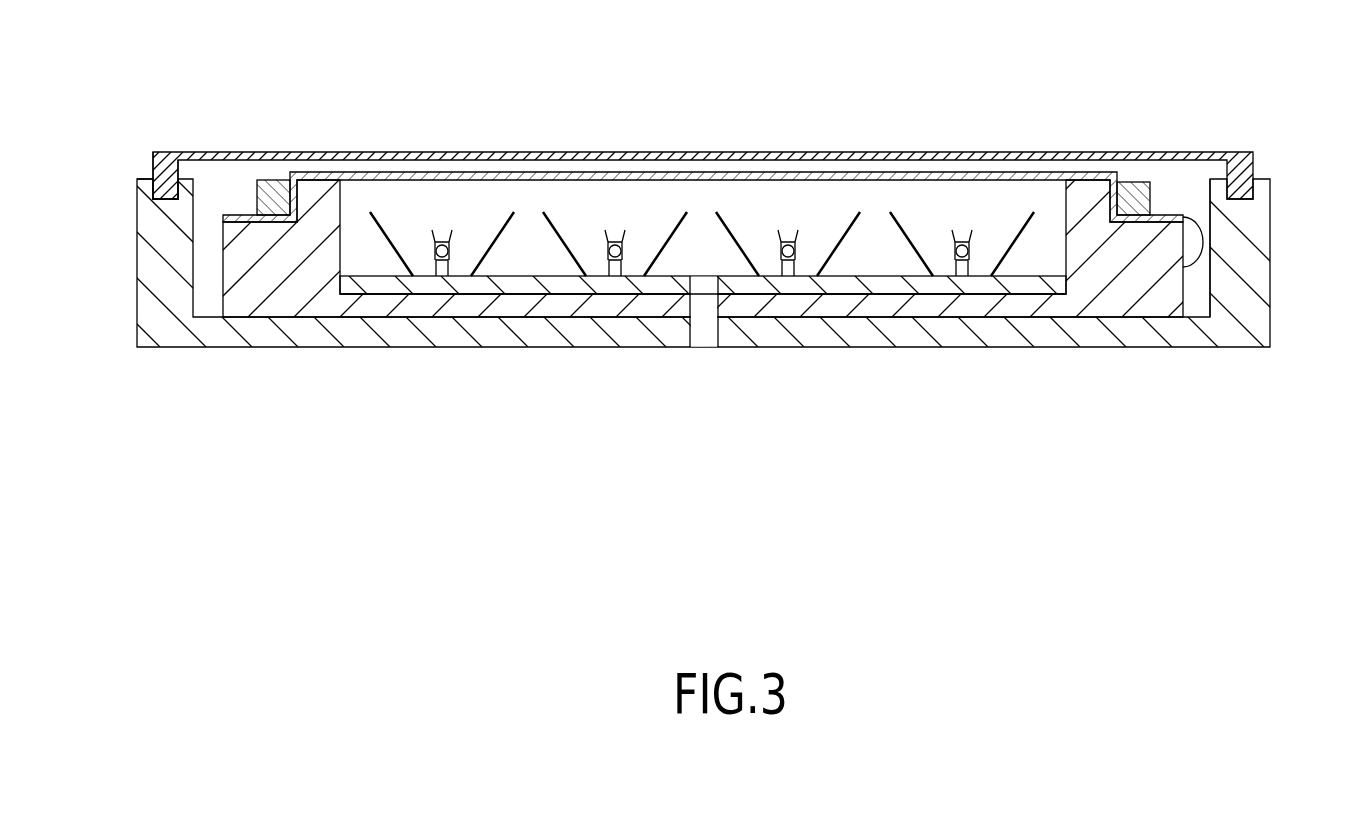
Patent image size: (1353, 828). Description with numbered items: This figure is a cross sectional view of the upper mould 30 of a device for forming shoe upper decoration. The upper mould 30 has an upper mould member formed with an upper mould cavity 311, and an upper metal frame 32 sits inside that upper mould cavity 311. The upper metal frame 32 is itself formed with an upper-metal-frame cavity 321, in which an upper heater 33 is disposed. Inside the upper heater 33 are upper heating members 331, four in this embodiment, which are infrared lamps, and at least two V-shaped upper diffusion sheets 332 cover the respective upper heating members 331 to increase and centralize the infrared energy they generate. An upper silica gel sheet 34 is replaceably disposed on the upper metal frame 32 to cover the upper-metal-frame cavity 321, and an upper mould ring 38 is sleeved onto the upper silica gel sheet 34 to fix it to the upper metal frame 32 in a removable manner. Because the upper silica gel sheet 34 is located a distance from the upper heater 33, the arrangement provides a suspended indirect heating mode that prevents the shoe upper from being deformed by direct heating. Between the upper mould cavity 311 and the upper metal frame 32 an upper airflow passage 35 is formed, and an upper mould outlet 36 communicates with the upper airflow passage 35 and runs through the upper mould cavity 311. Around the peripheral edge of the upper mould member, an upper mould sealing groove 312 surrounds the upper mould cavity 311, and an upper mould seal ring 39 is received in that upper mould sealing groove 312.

The upper mould 30 is at (1284, 218).
The upper mould cavity 311 is at (1210, 195).
The upper mould sealing groove 312 is at (153, 197).
The upper metal frame 32 is at (317, 227).
The upper-metal-frame cavity 321 is at (342, 203).
The upper heater 33 is at (560, 301).
The upper heating member 331 is at (960, 263).
The V-shaped upper diffusion sheet 332 is at (1000, 250).
The upper silica gel sheet 34 is at (985, 170).
The upper airflow passage 35 is at (1179, 197).
The upper mould outlet 36 is at (1187, 247).
The upper mould ring 38 is at (270, 195).
The upper mould seal ring 39 is at (165, 156).